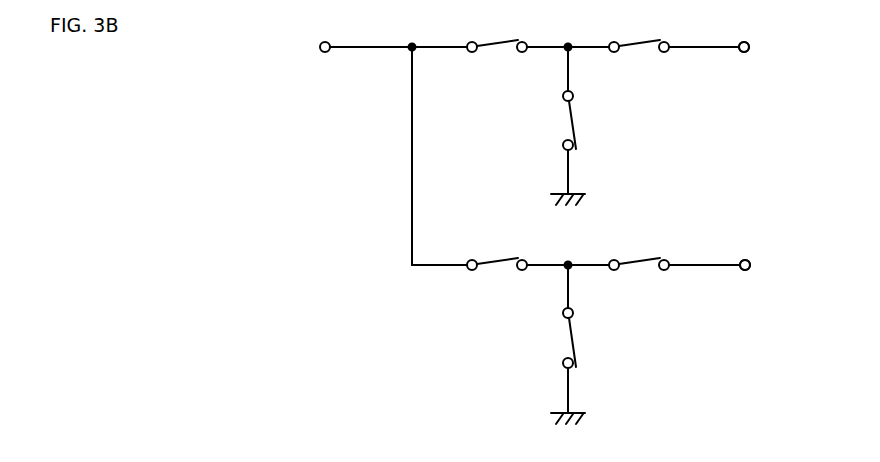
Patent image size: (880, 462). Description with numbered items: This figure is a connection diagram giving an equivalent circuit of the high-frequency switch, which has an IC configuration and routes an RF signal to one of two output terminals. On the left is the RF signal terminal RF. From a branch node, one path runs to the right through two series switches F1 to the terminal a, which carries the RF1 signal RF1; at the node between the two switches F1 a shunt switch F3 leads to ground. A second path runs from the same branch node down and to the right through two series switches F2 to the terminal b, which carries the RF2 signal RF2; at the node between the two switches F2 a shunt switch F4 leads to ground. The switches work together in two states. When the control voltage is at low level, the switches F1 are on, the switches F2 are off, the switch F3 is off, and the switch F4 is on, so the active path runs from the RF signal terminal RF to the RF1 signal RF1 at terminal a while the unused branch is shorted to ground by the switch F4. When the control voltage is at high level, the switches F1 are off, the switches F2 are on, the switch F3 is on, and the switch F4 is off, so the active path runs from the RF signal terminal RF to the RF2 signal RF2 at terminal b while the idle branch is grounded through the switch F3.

The RF signal terminal RF is at (306, 47).
The RF1 signal RF1 is at (767, 47).
The RF2 signal RF2 is at (768, 265).
The terminal a is at (744, 41).
The terminal b is at (745, 259).
The switches F1 is at (504, 41).
The switches F2 is at (504, 259).
The switch F3 is at (573, 124).
The switch F4 is at (573, 337).